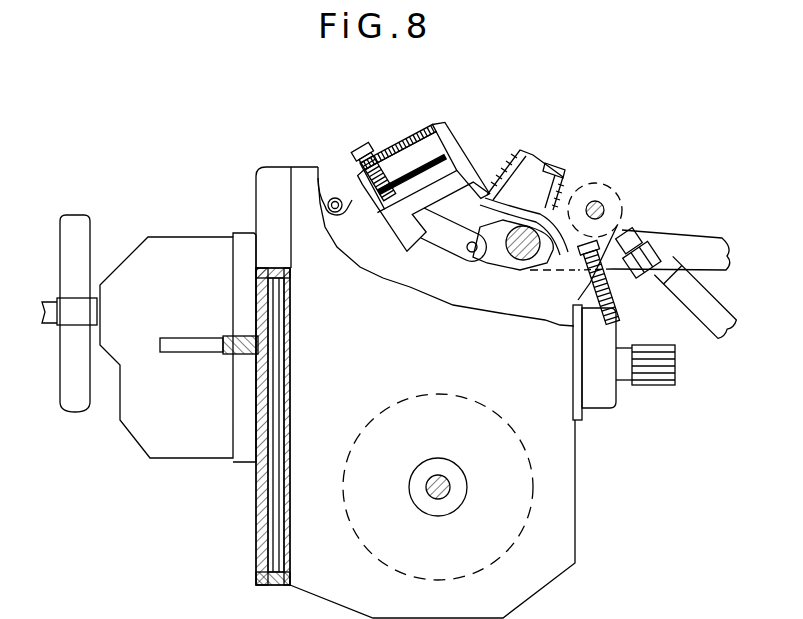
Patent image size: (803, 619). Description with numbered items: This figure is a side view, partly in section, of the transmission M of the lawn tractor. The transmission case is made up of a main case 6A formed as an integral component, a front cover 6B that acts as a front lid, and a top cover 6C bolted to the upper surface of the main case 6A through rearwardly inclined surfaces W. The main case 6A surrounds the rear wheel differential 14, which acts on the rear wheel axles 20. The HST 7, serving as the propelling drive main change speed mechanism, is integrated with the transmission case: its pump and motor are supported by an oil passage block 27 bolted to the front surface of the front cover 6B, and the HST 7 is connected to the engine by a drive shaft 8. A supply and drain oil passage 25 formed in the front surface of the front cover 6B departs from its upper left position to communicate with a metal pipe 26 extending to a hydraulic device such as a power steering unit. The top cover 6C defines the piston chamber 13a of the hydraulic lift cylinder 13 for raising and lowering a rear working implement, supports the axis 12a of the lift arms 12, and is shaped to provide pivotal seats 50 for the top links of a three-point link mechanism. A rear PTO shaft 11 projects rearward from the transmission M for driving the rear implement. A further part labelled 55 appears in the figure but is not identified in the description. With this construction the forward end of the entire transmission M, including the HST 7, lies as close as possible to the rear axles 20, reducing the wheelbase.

The transmission M is at (588, 567).
The main case 6A is at (560, 492).
The front cover 6B is at (258, 183).
The top cover 6C is at (405, 143).
The HST 7 is at (143, 232).
The drive shaft 8 is at (55, 322).
The rear PTO shaft 11 is at (663, 385).
The lift arms 12 is at (688, 240).
The lift arm axis 12a is at (527, 232).
The hydraulic cylinder 13 is at (464, 150).
The piston chamber 13a is at (420, 226).
The rear wheel differential 14 is at (377, 421).
The rear wheel axles 20 is at (440, 499).
The supply and drain oil passage 25 is at (275, 305).
The metal pipe 26 is at (188, 336).
The oil passage block 27 is at (238, 438).
The pivotal seats 50 is at (604, 192).
The hose fitting 55 is at (615, 220).
The inclined surfaces W is at (552, 268).